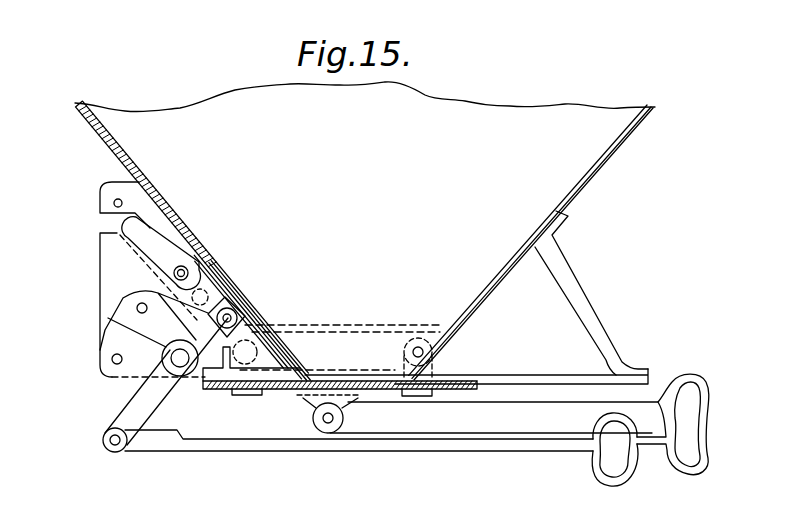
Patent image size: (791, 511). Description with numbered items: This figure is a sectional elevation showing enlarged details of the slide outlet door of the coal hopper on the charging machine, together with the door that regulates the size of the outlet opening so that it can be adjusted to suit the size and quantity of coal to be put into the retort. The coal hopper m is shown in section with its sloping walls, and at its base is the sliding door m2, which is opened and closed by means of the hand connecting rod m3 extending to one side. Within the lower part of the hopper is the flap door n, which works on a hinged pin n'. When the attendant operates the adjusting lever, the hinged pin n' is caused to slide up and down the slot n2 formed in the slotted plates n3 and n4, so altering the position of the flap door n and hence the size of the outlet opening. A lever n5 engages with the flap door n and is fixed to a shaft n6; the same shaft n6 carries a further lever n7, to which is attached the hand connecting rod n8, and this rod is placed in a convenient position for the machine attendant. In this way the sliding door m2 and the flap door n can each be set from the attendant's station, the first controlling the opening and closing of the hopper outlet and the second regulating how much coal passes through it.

The coal hopper m is at (365, 233).
The sliding door m2 is at (460, 381).
The hand connecting rod m3 is at (503, 424).
The flap door n is at (252, 317).
The hinged pin n' is at (150, 270).
The slot n2 is at (162, 246).
The slotted plate n3 is at (101, 224).
The slotted plate n4 is at (250, 325).
The lever n5 is at (220, 326).
The shaft n6 is at (183, 362).
The lever n7 is at (130, 411).
The hand connecting rod n8 is at (298, 443).